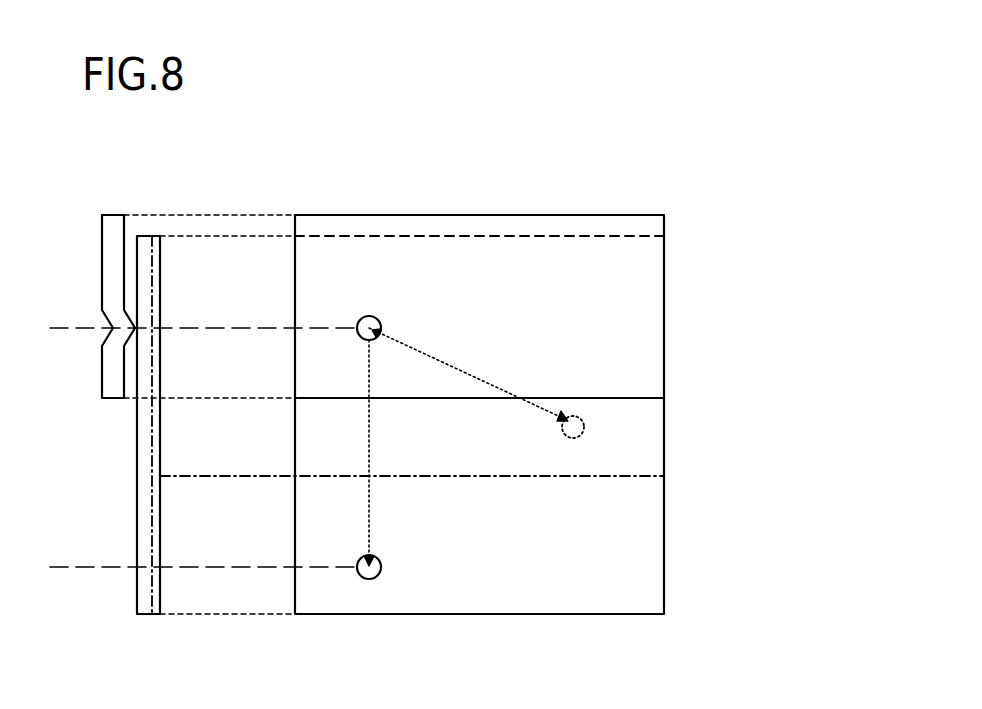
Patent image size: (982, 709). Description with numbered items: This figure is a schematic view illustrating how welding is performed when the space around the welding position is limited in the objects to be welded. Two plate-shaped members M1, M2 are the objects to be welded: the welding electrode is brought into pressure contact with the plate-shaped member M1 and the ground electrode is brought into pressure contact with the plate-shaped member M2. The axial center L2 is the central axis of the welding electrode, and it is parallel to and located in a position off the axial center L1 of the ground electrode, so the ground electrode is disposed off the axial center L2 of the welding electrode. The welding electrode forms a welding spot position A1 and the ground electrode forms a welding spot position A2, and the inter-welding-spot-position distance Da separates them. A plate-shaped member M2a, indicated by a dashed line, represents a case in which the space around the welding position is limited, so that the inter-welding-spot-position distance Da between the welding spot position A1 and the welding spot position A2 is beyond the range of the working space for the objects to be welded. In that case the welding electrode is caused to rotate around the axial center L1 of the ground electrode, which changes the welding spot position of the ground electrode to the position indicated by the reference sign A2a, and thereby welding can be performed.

The plate-shaped member M1 is at (112, 214).
The plate-shaped member M2 is at (140, 615).
The plate-shaped member M2a is at (153, 476).
The axial center L1 is at (63, 567).
The axial center L2 is at (63, 328).
The welding spot position A1 is at (365, 317).
The welding spot position A2 is at (368, 578).
The welding spot position A2a is at (583, 432).
The inter-welding-spot-position distance Da is at (492, 388).